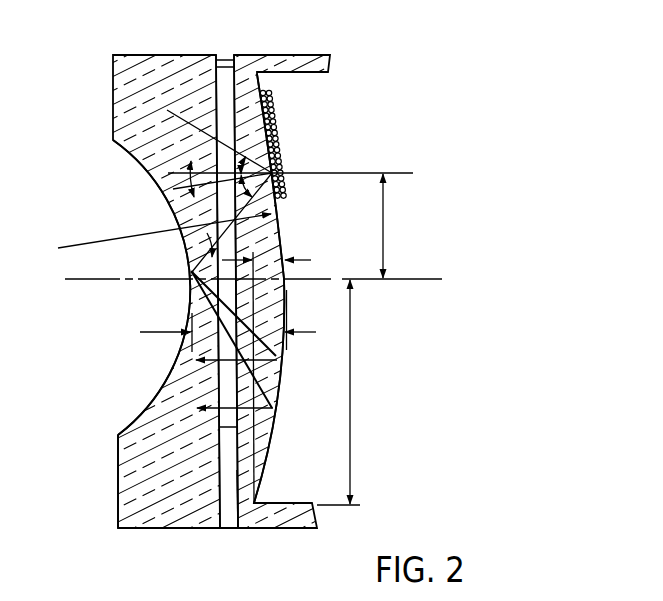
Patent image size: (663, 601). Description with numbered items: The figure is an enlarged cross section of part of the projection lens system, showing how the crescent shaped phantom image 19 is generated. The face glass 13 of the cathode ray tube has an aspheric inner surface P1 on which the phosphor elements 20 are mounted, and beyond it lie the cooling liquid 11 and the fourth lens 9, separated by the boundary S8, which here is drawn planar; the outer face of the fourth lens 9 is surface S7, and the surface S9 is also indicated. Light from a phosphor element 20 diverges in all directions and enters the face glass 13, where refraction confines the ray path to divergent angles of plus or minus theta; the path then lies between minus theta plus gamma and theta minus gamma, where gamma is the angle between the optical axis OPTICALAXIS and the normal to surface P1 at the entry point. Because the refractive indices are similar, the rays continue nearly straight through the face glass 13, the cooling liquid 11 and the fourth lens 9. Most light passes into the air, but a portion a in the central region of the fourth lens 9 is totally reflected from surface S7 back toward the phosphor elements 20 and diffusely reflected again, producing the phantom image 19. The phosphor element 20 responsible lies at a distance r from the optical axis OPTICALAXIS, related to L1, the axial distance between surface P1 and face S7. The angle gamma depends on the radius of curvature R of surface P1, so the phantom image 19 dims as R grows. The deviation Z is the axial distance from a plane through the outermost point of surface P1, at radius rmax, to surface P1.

The fourth lens 9 is at (162, 55).
The cooling liquid 11 is at (221, 55).
The face glass 13 is at (298, 55).
The phosphor elements 20 is at (284, 130).
The phantom image 19 is at (182, 410).
The surface of fourth lens S7 is at (120, 432).
The boundary between fourth lens and cooling liquid S8 is at (221, 506).
The surface S9 is at (235, 488).
The inner surface of face glass P1 is at (257, 467).
The deviation Z is at (266, 245).
The distance between surface P1 and face S7 L1 is at (300, 320).
The distance from optical axis r is at (390, 226).
The maximum distance from optical axis rmax is at (358, 392).
The radius of curvature of surface P1 R is at (100, 240).
The portion of the light beam a is at (200, 290).
The divergent angle theta is at (235, 175).
The angle between optical axis and normal axis gamma is at (192, 201).
The optical axis OPTICALAXIS is at (404, 281).